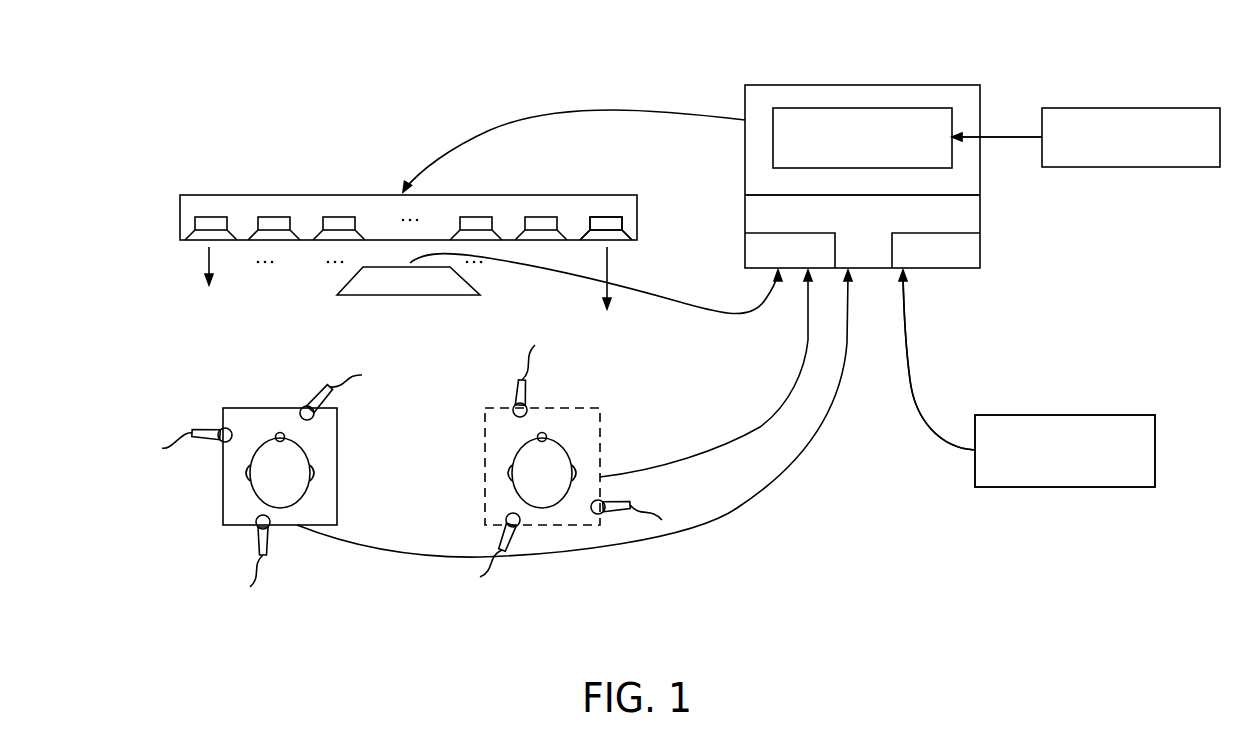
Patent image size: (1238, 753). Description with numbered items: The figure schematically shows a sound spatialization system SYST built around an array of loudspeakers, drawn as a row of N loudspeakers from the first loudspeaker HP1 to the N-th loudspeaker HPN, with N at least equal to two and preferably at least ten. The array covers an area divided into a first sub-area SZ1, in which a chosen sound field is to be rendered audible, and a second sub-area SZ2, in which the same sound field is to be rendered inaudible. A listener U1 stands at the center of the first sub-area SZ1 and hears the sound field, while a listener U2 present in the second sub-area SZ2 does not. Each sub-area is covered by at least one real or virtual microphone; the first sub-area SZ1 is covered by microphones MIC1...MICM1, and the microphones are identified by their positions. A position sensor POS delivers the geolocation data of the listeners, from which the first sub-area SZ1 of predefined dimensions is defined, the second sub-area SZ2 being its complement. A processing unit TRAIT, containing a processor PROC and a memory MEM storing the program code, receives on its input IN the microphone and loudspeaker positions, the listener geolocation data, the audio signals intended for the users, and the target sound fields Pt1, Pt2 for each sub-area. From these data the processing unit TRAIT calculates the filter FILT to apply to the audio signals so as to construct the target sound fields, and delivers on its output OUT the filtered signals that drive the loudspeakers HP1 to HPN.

The system SYST is at (1037, 31).
The filter FILT is at (862, 138).
The processing unit TRAIT is at (862, 213).
The processor PROC is at (790, 250).
The memory MEM is at (936, 250).
The output OUT is at (1010, 177).
The input IN is at (980, 363).
The target sound field Pt1 is at (1027, 378).
The target sound field Pt2 is at (1065, 451).
The first loudspeaker HP1 is at (215, 227).
The N-th loudspeaker HPN is at (600, 228).
The position sensor POS is at (559, 289).
The first sub-area SZ1 is at (322, 435).
The second sub-area SZ2 is at (590, 445).
The listener U1 is at (280, 471).
The listener U2 is at (542, 471).
The microphones of first sub-area MIC1...MICM1 is at (253, 542).